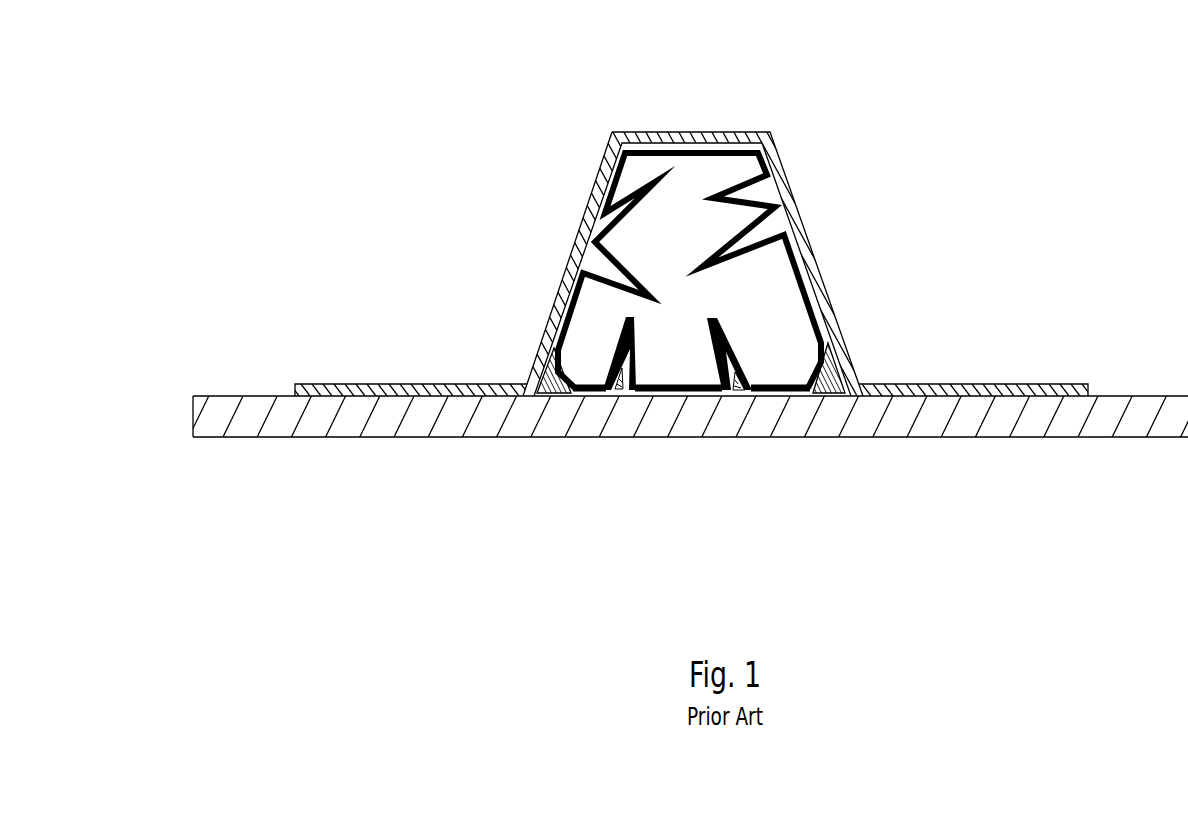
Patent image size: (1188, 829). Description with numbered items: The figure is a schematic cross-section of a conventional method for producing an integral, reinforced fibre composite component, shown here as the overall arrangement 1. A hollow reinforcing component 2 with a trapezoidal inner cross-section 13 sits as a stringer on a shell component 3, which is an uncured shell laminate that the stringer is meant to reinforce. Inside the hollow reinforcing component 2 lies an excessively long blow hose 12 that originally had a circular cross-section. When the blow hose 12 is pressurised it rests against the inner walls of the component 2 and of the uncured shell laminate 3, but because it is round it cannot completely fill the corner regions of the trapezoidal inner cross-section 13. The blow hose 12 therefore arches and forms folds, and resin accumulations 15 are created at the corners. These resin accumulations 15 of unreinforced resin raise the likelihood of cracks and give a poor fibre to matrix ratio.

The package assembly (prior art) 1 is at (458, 118).
The hollow reinforcing component 2 is at (662, 131).
The shell component 3 is at (390, 426).
The blow hose 12 is at (788, 238).
The trapezoidal inner cross-section 13 is at (576, 262).
The resin accumulations 15 is at (615, 385).